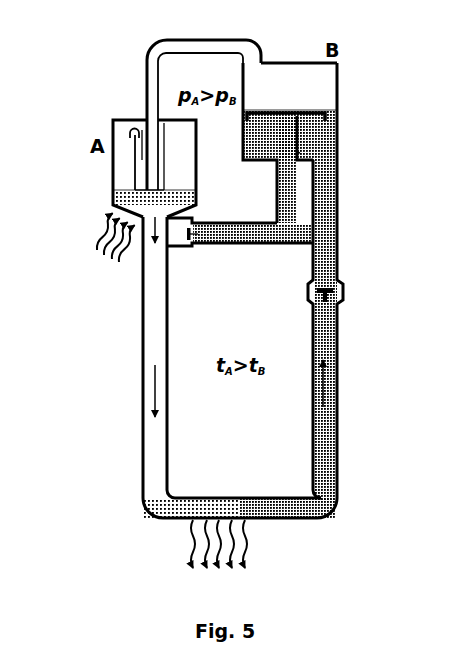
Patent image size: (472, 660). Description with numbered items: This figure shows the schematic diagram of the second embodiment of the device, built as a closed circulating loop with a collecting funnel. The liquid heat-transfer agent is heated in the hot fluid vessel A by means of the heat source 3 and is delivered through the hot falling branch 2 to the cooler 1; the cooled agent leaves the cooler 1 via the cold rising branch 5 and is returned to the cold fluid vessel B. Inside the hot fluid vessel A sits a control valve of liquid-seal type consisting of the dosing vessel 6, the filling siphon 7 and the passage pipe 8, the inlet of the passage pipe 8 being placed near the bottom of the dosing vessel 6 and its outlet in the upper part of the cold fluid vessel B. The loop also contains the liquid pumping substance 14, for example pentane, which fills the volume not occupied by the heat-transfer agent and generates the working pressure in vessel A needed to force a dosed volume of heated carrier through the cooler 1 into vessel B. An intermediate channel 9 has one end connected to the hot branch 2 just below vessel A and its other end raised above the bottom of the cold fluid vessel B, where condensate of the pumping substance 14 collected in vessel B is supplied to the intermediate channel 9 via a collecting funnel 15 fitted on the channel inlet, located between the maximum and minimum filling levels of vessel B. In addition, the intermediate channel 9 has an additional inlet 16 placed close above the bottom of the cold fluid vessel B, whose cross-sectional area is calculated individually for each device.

The cooler 1 is at (245, 538).
The hot falling branch 2 is at (143, 400).
The heat source 3 is at (115, 248).
The cold rising branch 5 is at (337, 425).
The dosing vessel 6 is at (137, 131).
The filling siphon 7 is at (133, 136).
The passage pipe 8 is at (147, 80).
The intermediate channel 9 is at (287, 243).
The liquid pumping substance 14 is at (310, 110).
The collecting funnel 15 is at (325, 117).
The additional inlet 16 is at (300, 151).